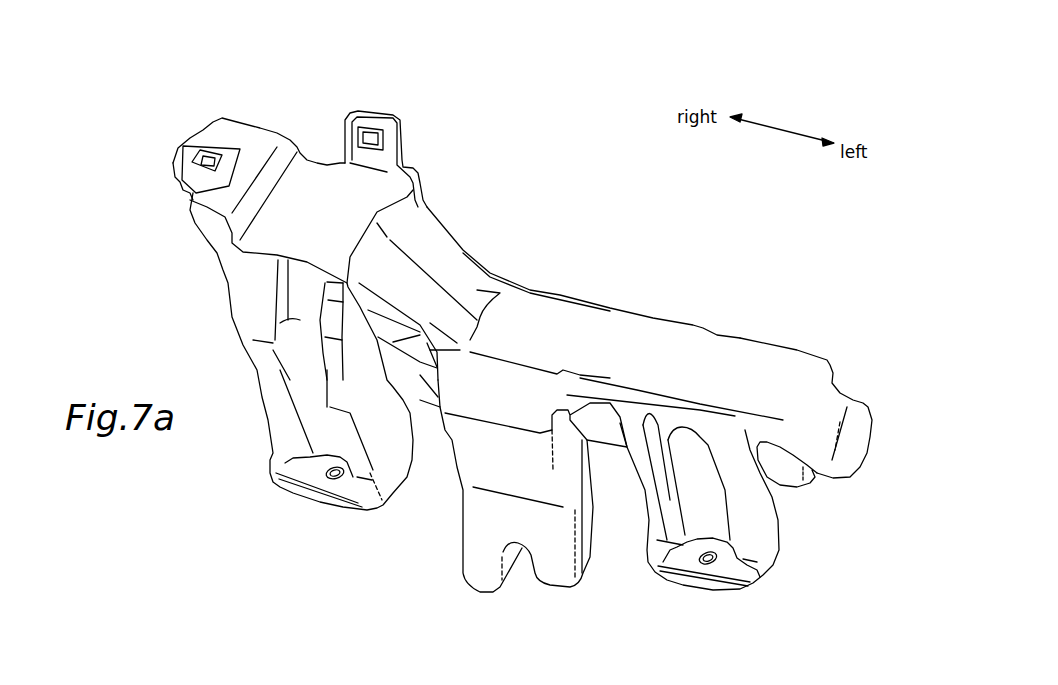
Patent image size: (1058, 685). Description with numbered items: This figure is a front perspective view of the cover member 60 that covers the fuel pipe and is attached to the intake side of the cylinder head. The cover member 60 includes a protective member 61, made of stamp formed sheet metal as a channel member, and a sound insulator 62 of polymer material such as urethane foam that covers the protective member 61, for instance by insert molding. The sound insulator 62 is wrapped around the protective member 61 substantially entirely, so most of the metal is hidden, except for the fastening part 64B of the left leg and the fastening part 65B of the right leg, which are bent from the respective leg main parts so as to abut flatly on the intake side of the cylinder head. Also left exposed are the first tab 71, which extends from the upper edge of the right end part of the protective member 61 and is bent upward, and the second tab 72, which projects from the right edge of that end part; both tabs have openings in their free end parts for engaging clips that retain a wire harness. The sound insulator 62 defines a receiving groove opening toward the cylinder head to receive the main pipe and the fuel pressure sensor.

The cover member 60 is at (212, 84).
The protective member 61 is at (198, 182).
The sound insulator 62 is at (455, 250).
The fastening part 64B is at (730, 572).
The fastening part 65B is at (287, 483).
The first tab 71 is at (353, 123).
The second tab 72 is at (187, 158).